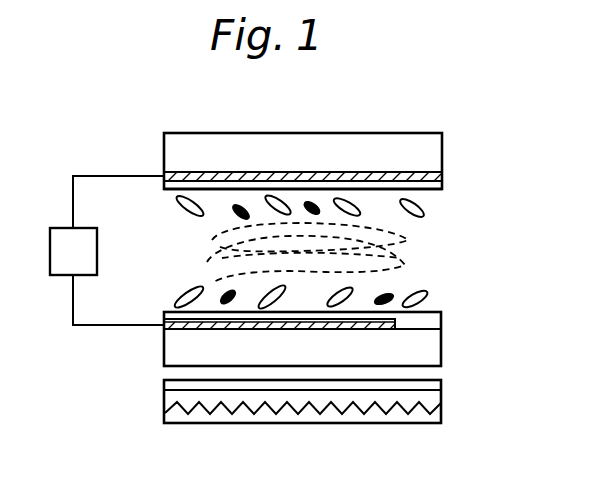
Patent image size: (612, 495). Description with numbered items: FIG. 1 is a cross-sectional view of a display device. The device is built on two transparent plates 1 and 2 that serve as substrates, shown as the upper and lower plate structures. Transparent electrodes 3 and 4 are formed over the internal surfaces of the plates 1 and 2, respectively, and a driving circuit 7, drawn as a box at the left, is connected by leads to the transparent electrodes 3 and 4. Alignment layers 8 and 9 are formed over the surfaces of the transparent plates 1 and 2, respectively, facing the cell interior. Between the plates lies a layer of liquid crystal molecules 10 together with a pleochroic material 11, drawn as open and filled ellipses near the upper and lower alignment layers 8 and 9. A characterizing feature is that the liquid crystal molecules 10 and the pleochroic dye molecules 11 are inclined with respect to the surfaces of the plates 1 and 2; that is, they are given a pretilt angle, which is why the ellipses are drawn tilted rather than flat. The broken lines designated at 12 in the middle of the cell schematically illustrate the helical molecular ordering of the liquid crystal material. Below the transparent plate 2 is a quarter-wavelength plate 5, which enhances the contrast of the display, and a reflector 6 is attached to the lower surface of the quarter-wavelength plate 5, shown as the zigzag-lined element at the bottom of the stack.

The transparent plate 1 is at (442, 143).
The transparent plate 2 is at (441, 352).
The transparent electrode 3 is at (442, 172).
The transparent electrode 4 is at (395, 321).
The quarter-wavelength plate 5 is at (441, 383).
The reflector 6 is at (441, 417).
The driving circuit 7 is at (57, 267).
The alignment layer 8 is at (442, 187).
The alignment layer 9 is at (441, 321).
The liquid crystal molecules 10 is at (420, 214).
The pleochroic material 11 is at (393, 297).
The helical molecular ordering 12 is at (408, 240).